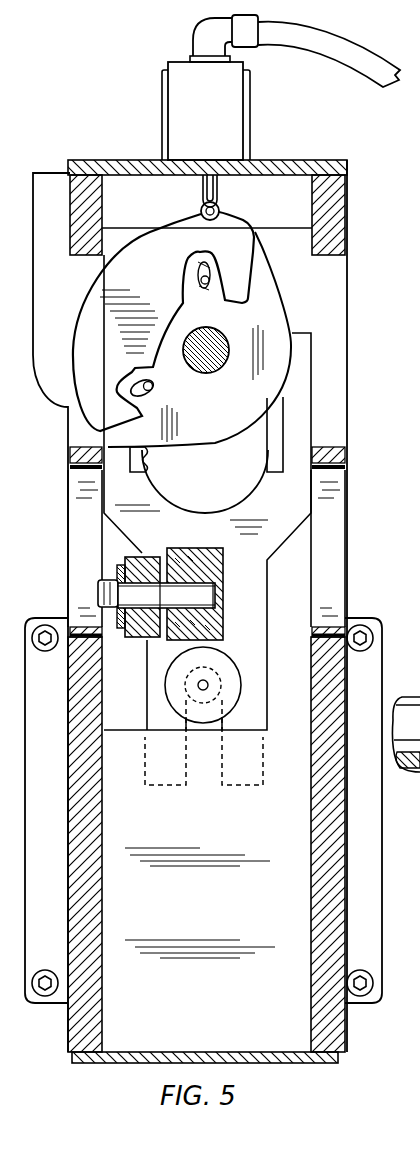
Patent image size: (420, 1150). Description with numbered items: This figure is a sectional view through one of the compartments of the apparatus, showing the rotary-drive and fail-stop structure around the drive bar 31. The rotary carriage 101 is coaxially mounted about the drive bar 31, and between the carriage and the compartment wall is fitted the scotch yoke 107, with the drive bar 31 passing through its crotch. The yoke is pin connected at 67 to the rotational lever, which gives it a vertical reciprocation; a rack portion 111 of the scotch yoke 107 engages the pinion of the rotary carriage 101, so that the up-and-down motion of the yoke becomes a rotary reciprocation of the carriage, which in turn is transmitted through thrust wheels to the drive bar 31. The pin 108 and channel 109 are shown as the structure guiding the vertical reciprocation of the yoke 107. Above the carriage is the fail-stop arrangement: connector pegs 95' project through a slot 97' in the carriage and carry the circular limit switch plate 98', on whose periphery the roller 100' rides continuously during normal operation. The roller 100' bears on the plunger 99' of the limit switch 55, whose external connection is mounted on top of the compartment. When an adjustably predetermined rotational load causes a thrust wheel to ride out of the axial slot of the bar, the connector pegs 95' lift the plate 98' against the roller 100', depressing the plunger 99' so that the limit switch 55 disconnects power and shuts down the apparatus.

The limit switch 55 is at (178, 80).
The plunger 99' is at (188, 191).
The roller 100' is at (234, 208).
The circular limit switch plate 98' is at (163, 321).
The slot 97' is at (198, 291).
The rotary carriage 101 is at (258, 295).
The drive bar 31 is at (218, 334).
The connector peg 95' is at (159, 389).
The rack portion 111 is at (150, 460).
The scotch yoke 107 is at (172, 521).
The pin connection 67 is at (200, 588).
The pin 108 is at (223, 684).
The channel 109 is at (187, 768).